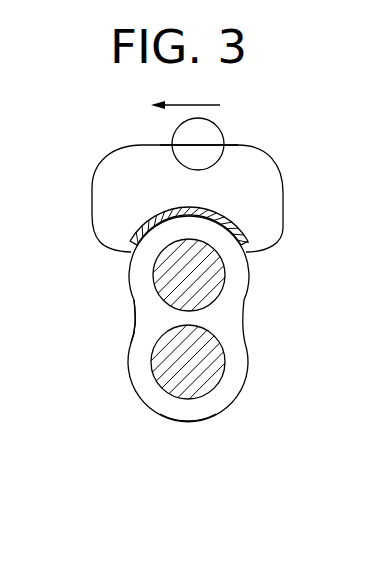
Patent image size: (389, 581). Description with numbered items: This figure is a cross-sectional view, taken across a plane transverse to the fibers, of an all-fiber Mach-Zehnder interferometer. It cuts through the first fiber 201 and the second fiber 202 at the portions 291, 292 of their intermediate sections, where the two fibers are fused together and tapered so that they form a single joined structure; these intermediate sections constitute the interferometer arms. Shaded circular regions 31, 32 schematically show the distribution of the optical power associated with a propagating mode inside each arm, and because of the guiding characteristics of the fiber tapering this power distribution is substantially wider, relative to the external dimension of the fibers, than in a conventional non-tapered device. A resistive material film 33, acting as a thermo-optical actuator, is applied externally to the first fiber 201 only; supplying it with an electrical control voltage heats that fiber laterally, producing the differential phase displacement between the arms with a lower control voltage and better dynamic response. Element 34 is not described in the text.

The first fiber 201 is at (122, 265).
The second fiber 202 is at (205, 430).
The shaded circular region 31 is at (165, 276).
The shaded circular region 32 is at (163, 372).
The resistive material film 33 is at (223, 215).
The roller 34 is at (224, 131).
The portion of the intermediate section of the first fiber 291 is at (248, 282).
The portion of the intermediate section of the second fiber 292 is at (247, 362).